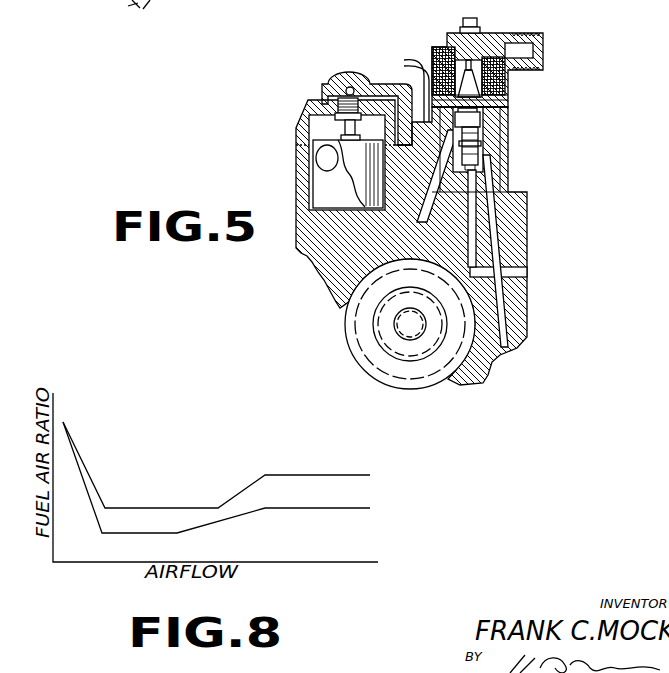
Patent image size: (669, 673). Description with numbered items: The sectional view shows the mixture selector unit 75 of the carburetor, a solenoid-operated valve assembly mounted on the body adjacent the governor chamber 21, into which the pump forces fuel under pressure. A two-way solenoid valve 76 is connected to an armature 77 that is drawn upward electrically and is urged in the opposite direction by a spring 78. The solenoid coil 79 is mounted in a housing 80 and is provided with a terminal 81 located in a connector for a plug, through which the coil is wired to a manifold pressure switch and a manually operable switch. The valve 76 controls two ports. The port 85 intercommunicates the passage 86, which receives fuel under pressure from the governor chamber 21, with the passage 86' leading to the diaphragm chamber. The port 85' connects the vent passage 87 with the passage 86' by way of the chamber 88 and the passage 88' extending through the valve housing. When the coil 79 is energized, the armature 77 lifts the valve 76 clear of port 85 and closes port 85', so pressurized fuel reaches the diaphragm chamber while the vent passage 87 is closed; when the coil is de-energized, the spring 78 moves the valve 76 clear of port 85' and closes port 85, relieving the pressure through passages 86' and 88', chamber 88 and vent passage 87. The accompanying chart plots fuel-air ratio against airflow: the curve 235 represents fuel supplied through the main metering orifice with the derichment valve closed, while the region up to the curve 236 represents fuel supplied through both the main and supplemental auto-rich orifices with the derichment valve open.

In FIG. 5, the governor chamber 21 is at (383, 262).
In FIG. 5, the mixture selector unit 75 is at (494, 22).
In FIG. 5, the two-way solenoid valve 76 is at (478, 134).
In FIG. 5, the armature 77 is at (508, 102).
In FIG. 5, the spring 78 is at (508, 85).
In FIG. 5, the solenoid coil 79 is at (436, 68).
In FIG. 5, the housing 80 is at (490, 53).
In FIG. 5, the terminal 81 is at (525, 50).
In FIG. 5, the port 85 is at (507, 206).
In FIG. 5, the port 85' is at (413, 91).
In FIG. 5, the passage 86 is at (520, 234).
In FIG. 5, the passage 86' is at (523, 251).
In FIG. 5, the vent passage 87 is at (383, 84).
In FIG. 5, the chamber 88 is at (519, 111).
In FIG. 5, the passage 88' is at (524, 141).
In FIG. 8, the curve 235 is at (298, 508).
In FIG. 8, the curve 236 is at (283, 475).